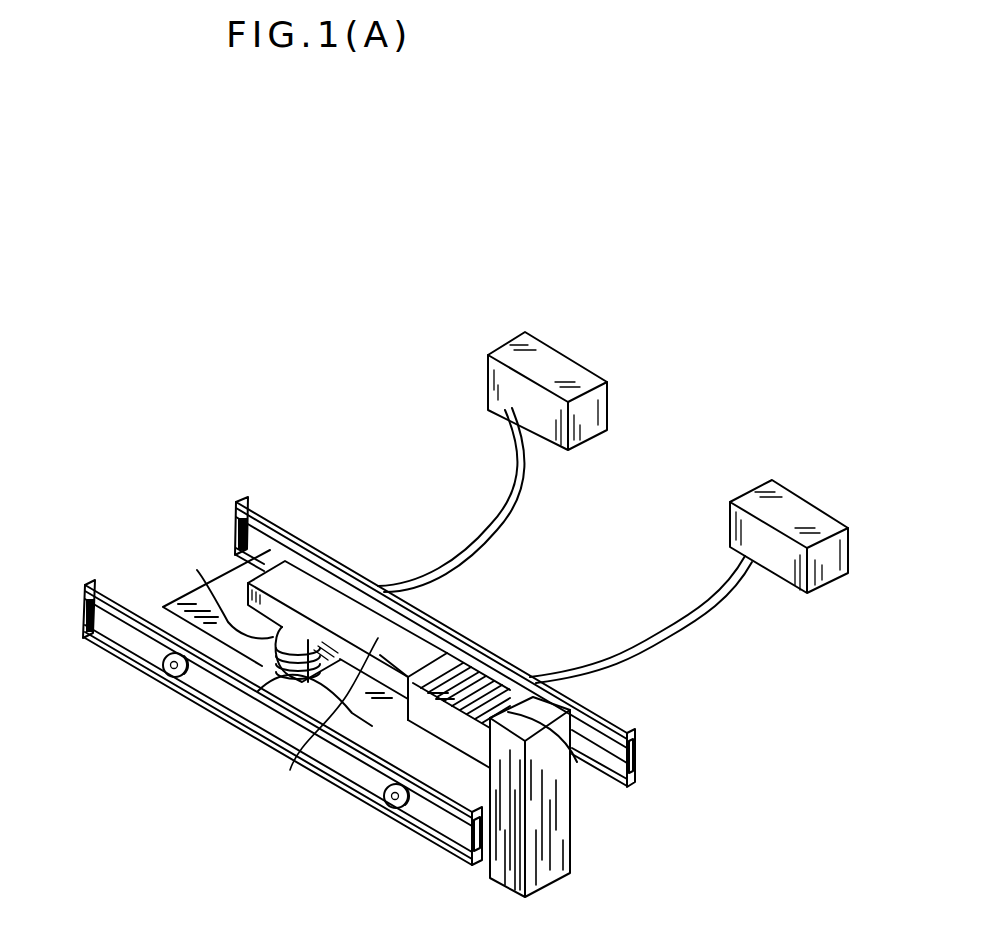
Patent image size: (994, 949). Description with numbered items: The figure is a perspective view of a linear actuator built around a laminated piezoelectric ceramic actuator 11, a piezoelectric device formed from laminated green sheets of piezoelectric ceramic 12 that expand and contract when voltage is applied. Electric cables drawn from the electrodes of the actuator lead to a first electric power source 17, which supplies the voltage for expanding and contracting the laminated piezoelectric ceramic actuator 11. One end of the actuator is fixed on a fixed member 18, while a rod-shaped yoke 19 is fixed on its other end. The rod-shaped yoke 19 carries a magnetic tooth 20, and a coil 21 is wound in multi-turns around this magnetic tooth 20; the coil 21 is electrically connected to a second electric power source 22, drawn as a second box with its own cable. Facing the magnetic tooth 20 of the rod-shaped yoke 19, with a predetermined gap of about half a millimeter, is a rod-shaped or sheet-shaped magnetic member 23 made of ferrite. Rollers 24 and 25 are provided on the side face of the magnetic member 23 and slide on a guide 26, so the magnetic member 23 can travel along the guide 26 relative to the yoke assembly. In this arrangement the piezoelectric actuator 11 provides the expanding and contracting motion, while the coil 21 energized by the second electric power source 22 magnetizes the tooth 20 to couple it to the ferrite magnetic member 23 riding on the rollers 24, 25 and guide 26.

The laminated piezoelectric ceramic actuator 11 is at (437, 700).
The piezoelectric ceramic 12 is at (577, 762).
The first electric power source 17 is at (800, 490).
The fixed member 18 is at (563, 873).
The rod-shaped yoke 19 is at (324, 721).
The magnetic tooth 20 is at (254, 740).
The coil 21 is at (197, 570).
The second electric power source 22 is at (567, 352).
The magnetic member 23 is at (163, 607).
The roller 24 is at (168, 674).
The roller 25 is at (400, 808).
The guide 26 is at (82, 614).